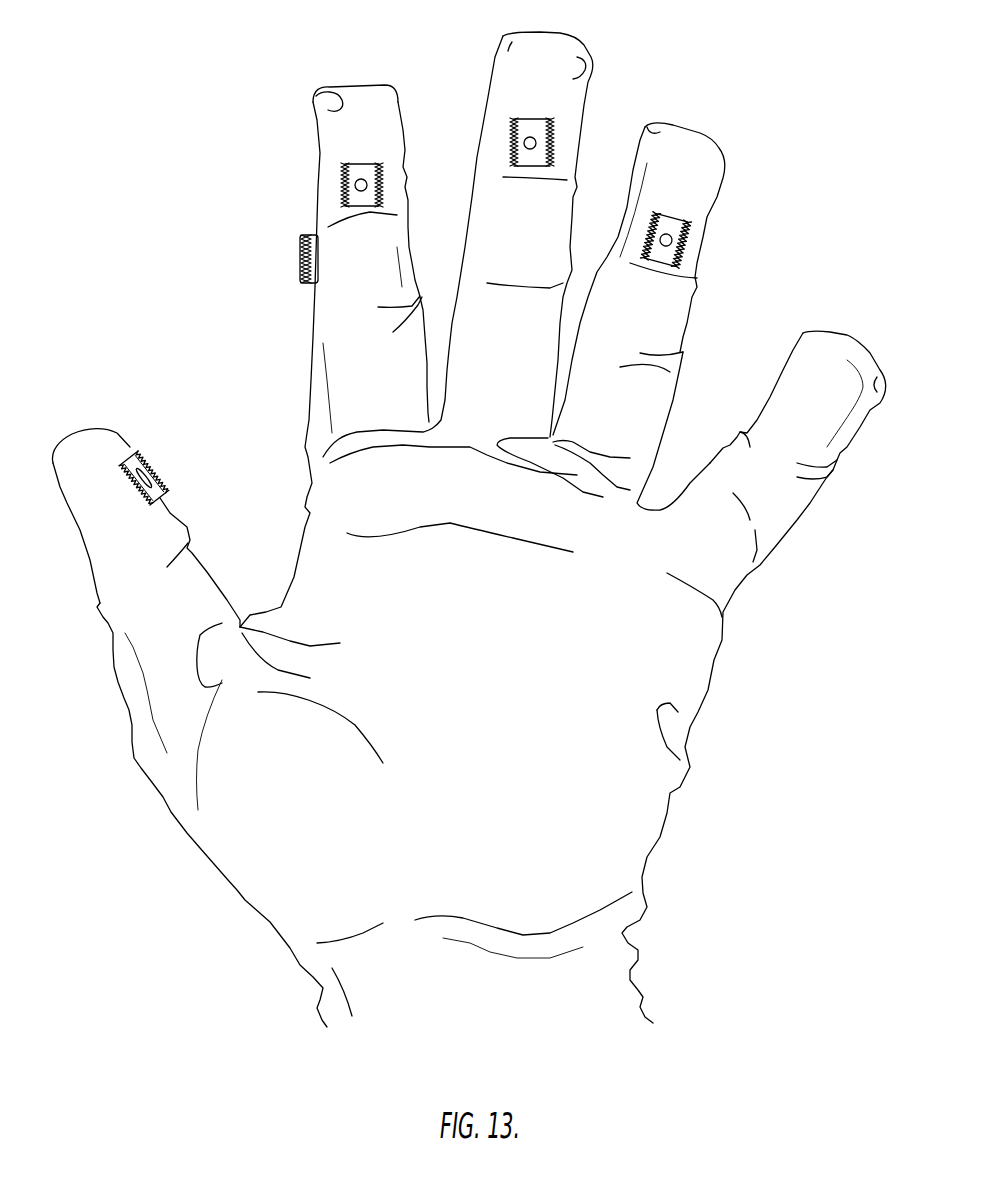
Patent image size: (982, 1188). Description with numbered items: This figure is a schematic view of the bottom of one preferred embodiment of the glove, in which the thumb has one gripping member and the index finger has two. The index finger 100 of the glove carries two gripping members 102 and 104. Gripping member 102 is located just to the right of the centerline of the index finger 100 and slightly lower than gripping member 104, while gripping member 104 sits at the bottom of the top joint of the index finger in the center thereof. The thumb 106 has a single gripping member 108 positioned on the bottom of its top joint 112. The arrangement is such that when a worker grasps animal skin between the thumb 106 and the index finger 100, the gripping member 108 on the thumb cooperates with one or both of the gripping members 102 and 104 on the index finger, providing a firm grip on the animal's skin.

The index finger 100 is at (357, 86).
The gripping member 102 is at (302, 260).
The gripping member 104 is at (384, 190).
The thumb 106 is at (75, 432).
The gripping member 108 is at (160, 469).
The top joint 112 is at (80, 480).